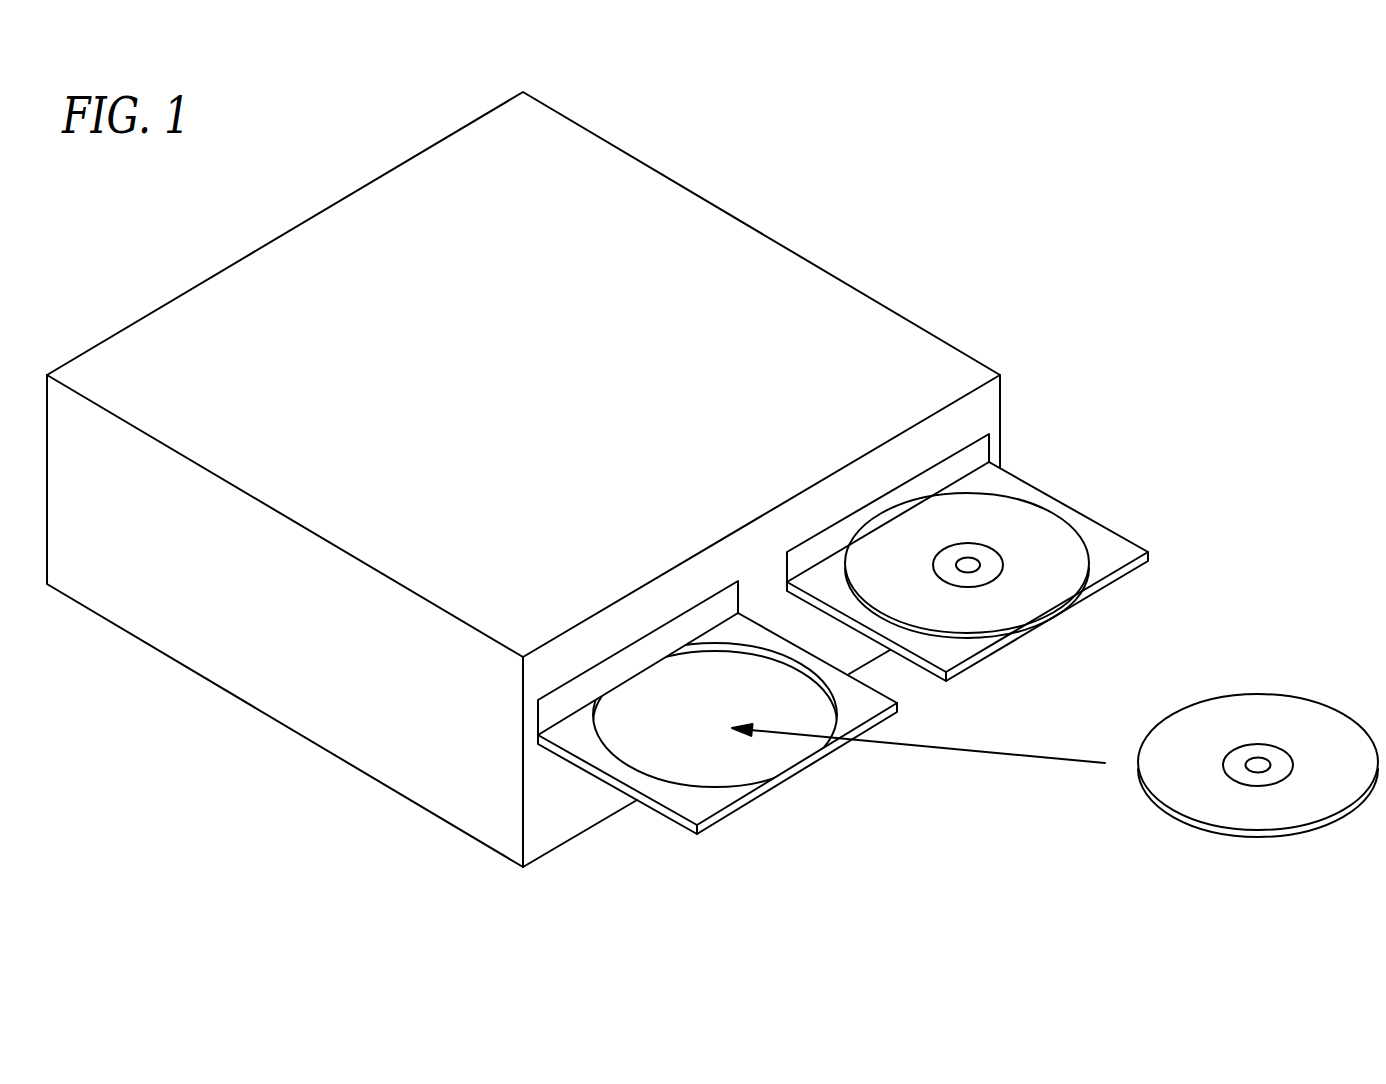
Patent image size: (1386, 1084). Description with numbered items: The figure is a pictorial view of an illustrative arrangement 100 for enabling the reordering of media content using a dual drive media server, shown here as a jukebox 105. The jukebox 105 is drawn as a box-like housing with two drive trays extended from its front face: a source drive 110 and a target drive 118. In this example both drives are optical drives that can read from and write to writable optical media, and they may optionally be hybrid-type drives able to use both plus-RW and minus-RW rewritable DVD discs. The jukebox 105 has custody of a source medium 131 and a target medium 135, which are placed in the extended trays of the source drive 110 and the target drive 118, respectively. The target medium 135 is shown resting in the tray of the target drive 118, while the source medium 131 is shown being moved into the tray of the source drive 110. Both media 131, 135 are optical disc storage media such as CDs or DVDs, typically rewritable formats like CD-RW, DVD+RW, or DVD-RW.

The arrangement 100 is at (940, 214).
The jukebox 105 is at (371, 778).
The source drive 110 is at (620, 660).
The target drive 118 is at (822, 540).
The source medium 131 is at (1235, 843).
The target medium 135 is at (1048, 620).